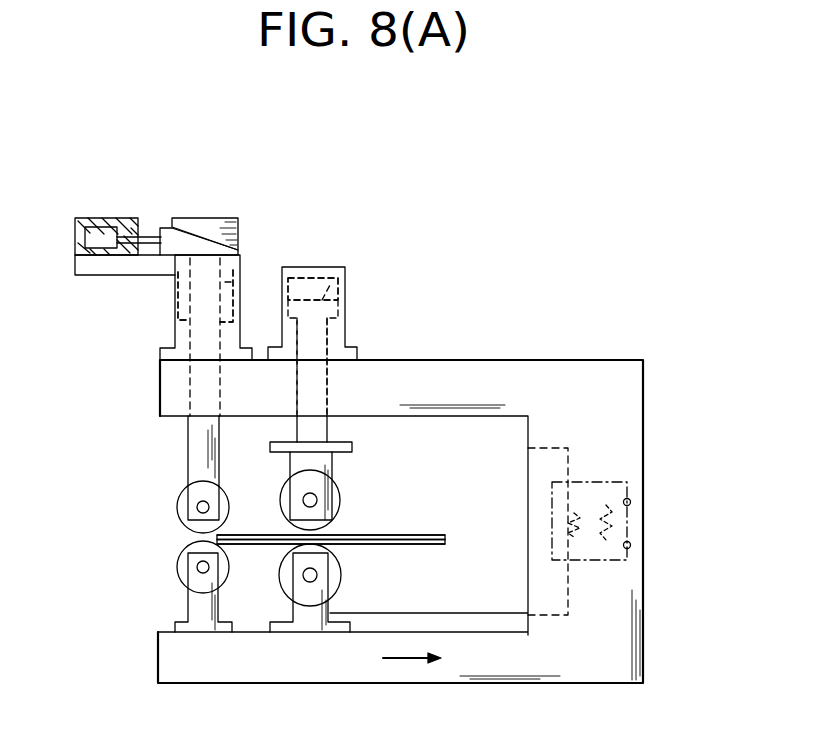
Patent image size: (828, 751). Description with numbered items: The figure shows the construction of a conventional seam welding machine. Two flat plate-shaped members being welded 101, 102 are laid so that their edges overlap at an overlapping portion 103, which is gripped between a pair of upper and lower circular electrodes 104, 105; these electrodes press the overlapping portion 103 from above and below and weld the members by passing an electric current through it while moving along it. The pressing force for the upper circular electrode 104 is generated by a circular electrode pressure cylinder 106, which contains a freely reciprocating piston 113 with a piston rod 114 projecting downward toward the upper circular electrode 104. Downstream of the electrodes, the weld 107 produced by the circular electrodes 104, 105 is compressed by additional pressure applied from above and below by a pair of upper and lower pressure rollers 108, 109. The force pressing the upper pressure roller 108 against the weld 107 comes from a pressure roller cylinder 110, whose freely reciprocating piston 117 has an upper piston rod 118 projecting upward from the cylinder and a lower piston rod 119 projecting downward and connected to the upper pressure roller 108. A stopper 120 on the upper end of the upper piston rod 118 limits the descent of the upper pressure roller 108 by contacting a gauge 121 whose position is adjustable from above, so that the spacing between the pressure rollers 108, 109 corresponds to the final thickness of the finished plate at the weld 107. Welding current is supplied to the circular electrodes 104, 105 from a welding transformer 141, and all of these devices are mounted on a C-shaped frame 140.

The flat plate-shaped member being welded 101 is at (430, 546).
The flat plate-shaped member being welded 102 is at (430, 534).
The overlapping portion 103 is at (395, 535).
The upper circular electrode 104 is at (340, 492).
The lower circular electrode 105 is at (340, 585).
The circular electrode pressure cylinder 106 is at (352, 318).
The weld 107 is at (255, 533).
The upper pressure roller 108 is at (185, 497).
The lower pressure roller 109 is at (178, 583).
The pressure roller cylinder 110 is at (168, 305).
The piston 113 is at (340, 274).
The piston rod 114 is at (328, 378).
The piston 117 is at (172, 320).
The upper piston rod 118 is at (240, 255).
The lower piston rod 119 is at (188, 383).
The stopper 120 is at (218, 216).
The gauge 121 is at (167, 226).
The C-shaped frame 140 is at (545, 360).
The welding transformer 141 is at (632, 507).